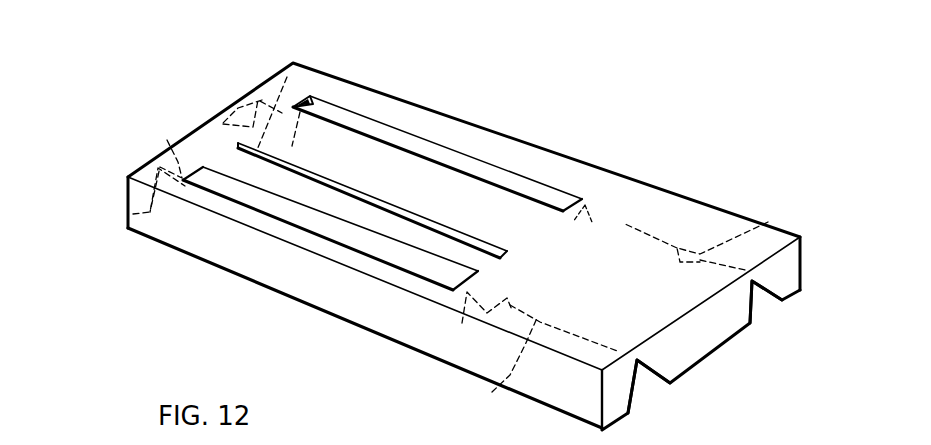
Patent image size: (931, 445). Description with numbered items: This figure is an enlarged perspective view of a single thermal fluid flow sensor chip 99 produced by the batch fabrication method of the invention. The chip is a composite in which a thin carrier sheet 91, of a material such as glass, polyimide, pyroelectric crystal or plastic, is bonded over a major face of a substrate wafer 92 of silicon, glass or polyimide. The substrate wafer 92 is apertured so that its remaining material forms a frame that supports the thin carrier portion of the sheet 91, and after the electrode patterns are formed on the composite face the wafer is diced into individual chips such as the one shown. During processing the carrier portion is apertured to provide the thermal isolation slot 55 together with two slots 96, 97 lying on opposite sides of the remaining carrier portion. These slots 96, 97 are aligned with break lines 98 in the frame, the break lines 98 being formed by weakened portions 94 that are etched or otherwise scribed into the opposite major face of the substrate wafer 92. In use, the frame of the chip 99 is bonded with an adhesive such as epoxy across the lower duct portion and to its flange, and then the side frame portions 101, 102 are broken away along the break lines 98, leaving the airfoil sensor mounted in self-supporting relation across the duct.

The thermal isolation slot 55 is at (367, 197).
The carrier sheet 91 is at (464, 246).
The substrate wafer 92 is at (752, 168).
The weakened portions 94 is at (763, 311).
The slot 96 is at (340, 113).
The slot 97 is at (246, 186).
The break lines 98 is at (287, 77).
The sensor chip 99 is at (330, 318).
The side frame portion 101 is at (474, 147).
The side frame portion 102 is at (314, 228).